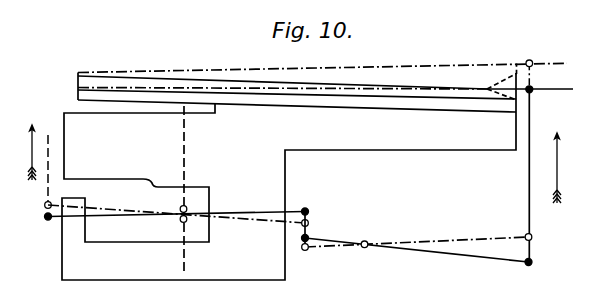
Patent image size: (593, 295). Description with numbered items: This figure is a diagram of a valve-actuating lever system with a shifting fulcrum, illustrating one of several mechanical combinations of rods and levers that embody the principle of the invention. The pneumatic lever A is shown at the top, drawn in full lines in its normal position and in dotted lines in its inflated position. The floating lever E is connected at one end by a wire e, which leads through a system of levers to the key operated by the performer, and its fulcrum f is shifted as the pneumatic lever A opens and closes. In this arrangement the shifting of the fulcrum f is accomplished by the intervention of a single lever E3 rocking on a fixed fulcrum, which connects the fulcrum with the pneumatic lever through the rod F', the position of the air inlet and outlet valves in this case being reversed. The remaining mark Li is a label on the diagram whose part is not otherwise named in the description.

The pneumatic lever A is at (493, 66).
The wire e is at (46, 188).
The floating lever E is at (244, 212).
The single lever rocking on a fixed fulcrum E3 is at (419, 249).
The vertical rod F' is at (535, 161).
The fulcrum f is at (531, 254).
The guide arrow Li is at (568, 193).